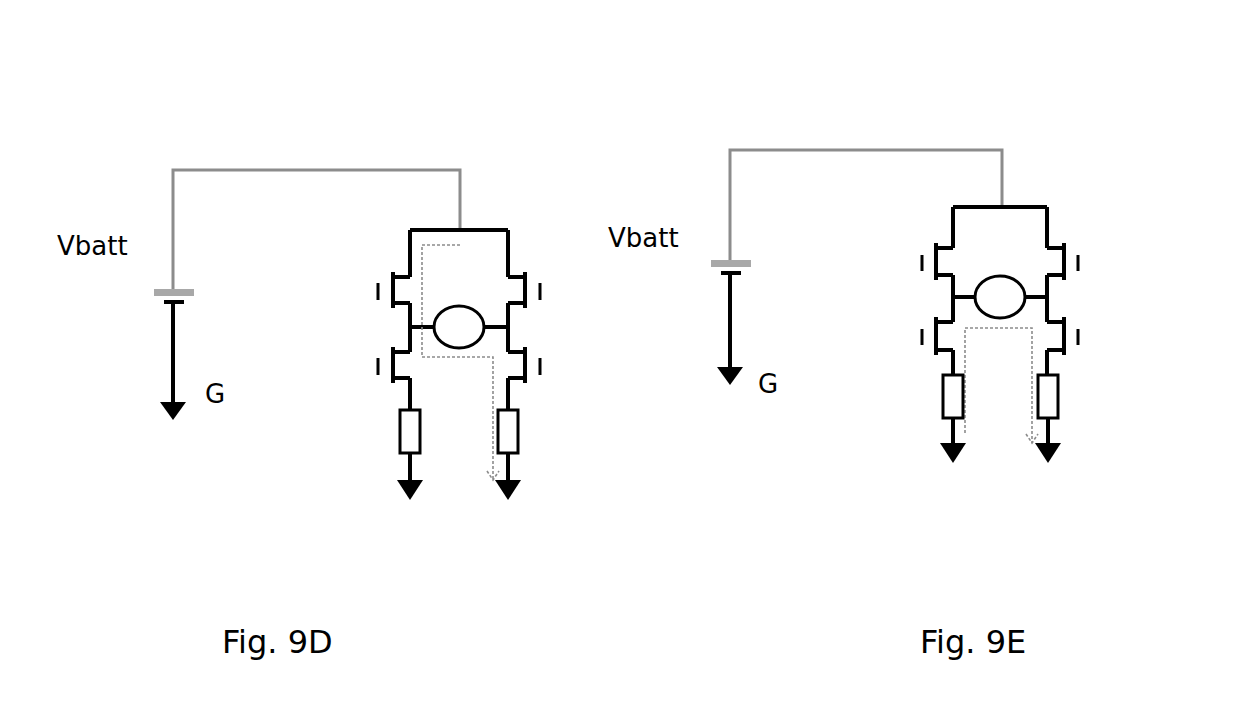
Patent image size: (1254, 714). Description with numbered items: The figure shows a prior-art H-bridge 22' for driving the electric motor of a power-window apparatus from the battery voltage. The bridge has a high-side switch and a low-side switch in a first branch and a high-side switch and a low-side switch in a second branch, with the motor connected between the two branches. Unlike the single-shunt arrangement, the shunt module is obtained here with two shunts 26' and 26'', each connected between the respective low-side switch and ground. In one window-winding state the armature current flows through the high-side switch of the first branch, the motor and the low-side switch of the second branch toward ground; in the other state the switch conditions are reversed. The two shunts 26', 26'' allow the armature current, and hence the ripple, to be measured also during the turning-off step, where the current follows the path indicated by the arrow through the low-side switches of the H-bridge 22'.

In FIG. 9D, the H-bridge 22' is at (493, 275).
In FIG. 9E, the H-bridge 22' is at (1030, 266).
In FIG. 9D, the shunt 26' is at (375, 455).
In FIG. 9E, the shunt 26' is at (913, 419).
In FIG. 9D, the shunt 26'' is at (549, 455).
In FIG. 9E, the shunt 26'' is at (1085, 419).